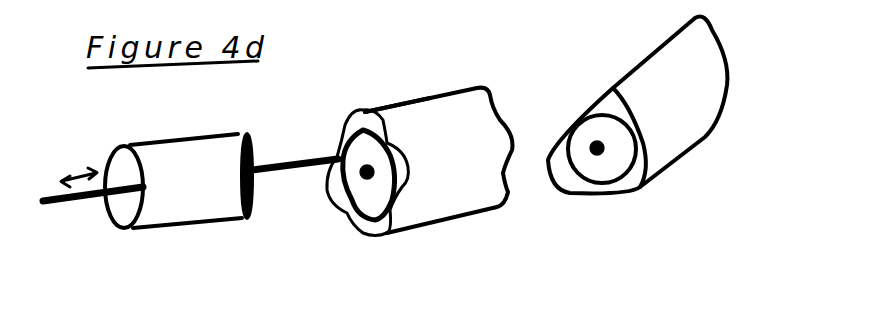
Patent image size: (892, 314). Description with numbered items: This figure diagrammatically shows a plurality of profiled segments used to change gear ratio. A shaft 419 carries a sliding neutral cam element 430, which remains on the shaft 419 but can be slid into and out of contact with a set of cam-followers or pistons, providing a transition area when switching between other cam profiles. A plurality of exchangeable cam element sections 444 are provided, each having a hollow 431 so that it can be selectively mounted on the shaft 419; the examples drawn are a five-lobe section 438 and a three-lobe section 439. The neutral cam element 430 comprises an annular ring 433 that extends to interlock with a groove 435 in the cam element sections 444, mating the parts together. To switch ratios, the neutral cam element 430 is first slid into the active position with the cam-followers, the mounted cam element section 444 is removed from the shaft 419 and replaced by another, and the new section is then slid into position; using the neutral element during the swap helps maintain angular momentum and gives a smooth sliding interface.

The shaft 419 is at (65, 204).
The neutral cam element 430 is at (185, 203).
The annular ring 433 is at (260, 146).
The hollow 431 is at (362, 178).
The groove 435 is at (377, 220).
The 5-lobe section 438 is at (483, 190).
The 3-lobe section 439 is at (700, 117).
The exchangeable cam element sections 444 is at (425, 110).